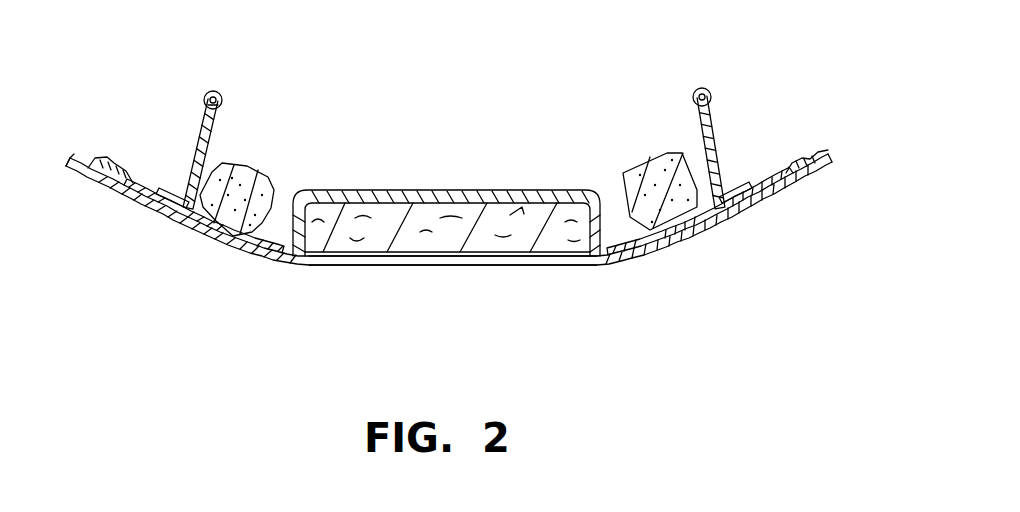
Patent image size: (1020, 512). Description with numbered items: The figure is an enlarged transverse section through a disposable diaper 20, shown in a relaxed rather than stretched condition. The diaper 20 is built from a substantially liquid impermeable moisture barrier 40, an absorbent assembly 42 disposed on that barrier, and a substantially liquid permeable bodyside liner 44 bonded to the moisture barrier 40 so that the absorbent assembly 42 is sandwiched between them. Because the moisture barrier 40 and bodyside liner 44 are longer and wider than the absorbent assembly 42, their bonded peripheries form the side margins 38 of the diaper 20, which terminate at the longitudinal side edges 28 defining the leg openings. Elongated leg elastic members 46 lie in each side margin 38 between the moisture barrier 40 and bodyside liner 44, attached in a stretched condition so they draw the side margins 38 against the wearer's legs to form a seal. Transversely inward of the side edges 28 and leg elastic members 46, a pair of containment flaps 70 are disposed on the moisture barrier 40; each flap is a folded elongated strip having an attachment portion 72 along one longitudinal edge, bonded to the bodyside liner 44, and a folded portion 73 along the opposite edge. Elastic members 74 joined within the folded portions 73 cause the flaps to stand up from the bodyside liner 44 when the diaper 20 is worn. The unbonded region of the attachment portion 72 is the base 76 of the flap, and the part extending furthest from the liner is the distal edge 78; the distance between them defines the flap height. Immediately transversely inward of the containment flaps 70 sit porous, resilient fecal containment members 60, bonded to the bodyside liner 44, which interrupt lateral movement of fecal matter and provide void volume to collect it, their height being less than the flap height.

The disposable diaper 20 is at (433, 160).
The longitudinal side edges 28 is at (69, 157).
The side margins 38 is at (697, 235).
The moisture barrier 40 is at (360, 258).
The absorbent assembly 42 is at (452, 244).
The bodyside liner 44 is at (500, 190).
The leg elastic members 46 is at (118, 192).
The fecal containment members 60 is at (270, 172).
The containment flaps 70 is at (188, 160).
The attachment portion 72 is at (148, 212).
The folded portion 73 is at (200, 108).
The elastic members 74 is at (214, 91).
The base 76 is at (188, 218).
The distal edge 78 is at (226, 100).